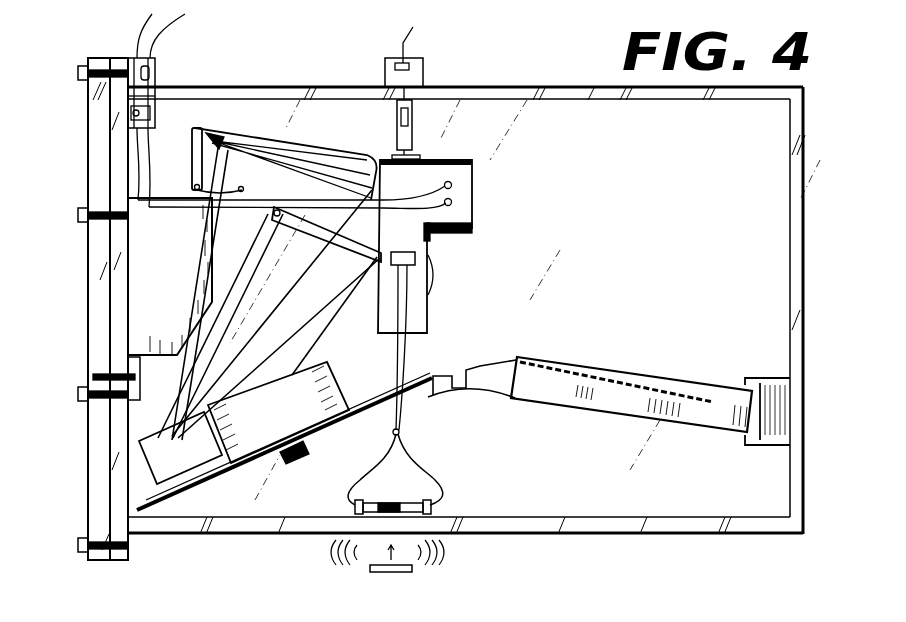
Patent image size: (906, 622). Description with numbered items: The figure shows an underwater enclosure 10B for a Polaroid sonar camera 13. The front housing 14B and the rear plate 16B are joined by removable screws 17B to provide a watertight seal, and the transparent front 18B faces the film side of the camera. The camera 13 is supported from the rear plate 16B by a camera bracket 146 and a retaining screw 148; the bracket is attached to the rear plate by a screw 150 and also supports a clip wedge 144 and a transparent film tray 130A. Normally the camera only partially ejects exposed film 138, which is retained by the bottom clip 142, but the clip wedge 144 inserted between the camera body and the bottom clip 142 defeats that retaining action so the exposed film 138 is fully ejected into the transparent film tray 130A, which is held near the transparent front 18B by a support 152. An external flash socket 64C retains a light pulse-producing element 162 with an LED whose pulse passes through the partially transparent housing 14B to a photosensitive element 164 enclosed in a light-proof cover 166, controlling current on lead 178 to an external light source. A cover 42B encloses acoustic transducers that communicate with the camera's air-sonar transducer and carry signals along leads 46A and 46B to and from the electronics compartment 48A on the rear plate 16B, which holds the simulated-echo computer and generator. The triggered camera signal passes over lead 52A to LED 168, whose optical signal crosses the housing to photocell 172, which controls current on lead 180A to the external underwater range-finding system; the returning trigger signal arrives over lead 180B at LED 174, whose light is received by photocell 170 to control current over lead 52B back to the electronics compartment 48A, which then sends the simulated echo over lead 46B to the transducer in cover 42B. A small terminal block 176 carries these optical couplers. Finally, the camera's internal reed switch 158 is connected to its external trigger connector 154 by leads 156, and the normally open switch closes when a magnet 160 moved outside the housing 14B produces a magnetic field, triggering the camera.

The underwater enclosure 10B is at (439, 302).
The front housing 14B is at (118, 57).
The transparent front 18B is at (803, 477).
The rear plate 16B is at (103, 261).
The removable screws 17B is at (78, 73).
The terminal box 176 is at (156, 62).
The LED 174 is at (152, 75).
The photocell 170 is at (155, 112).
The photocell 172 is at (128, 100).
The LED 168 is at (132, 114).
The lead 180A is at (152, 18).
The lead 180B is at (184, 16).
The lead 52A is at (137, 160).
The lead 52B is at (147, 185).
The lead 46A is at (440, 188).
The lead 46B is at (474, 210).
The electronics compartment 48A is at (185, 268).
The screw 150 is at (103, 373).
The cover 42B is at (474, 178).
The external trigger connector 154 is at (418, 258).
The external flash socket 64C is at (418, 160).
The light pulse-producing element 162 is at (415, 112).
The light-proof cover 166 is at (385, 68).
The photosensitive element 164 is at (423, 67).
The lead 178 is at (413, 27).
The sonar camera 13 is at (188, 468).
The camera bracket 146 is at (132, 426).
The retaining screw 148 is at (300, 456).
The bottom clip 142 is at (488, 378).
The clip wedge 144 is at (452, 400).
The transparent film tray 130A is at (648, 382).
The exposed film 138 is at (502, 366).
The support 152 is at (762, 450).
The leads 156 is at (398, 434).
The reed switch 158 is at (420, 495).
The magnet 160 is at (395, 573).